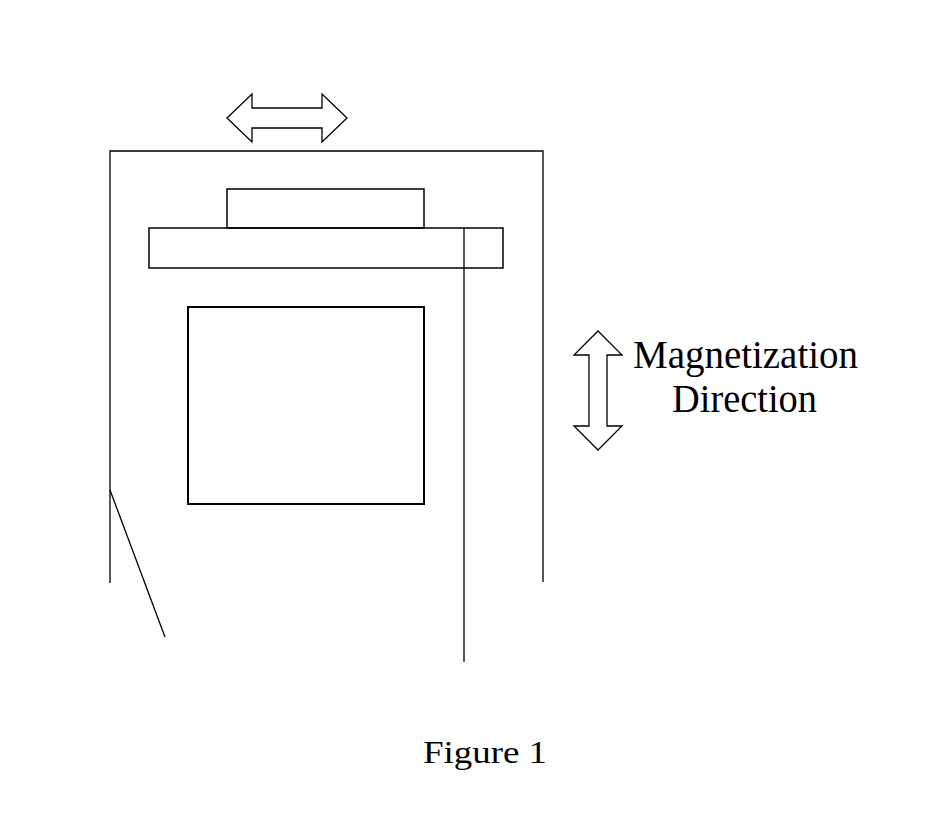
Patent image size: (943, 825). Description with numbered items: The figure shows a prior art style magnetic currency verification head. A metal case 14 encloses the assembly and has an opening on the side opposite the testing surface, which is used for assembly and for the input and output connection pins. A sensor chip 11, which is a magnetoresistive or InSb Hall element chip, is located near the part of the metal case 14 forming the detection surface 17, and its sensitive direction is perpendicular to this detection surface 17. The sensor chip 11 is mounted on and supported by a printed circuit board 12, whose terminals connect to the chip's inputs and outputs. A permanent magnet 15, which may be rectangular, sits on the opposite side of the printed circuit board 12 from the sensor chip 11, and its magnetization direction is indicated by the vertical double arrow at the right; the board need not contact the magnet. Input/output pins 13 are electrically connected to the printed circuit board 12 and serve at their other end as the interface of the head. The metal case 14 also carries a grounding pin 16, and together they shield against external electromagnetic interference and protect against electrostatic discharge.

The sensor chip 11 is at (385, 189).
The printed circuit board 12 is at (188, 228).
The input/output pins 13 is at (464, 607).
The metal case 14 is at (543, 210).
The permanent magnet 15 is at (188, 385).
The grounding pin 16 is at (148, 598).
The detection surface 17 is at (297, 110).